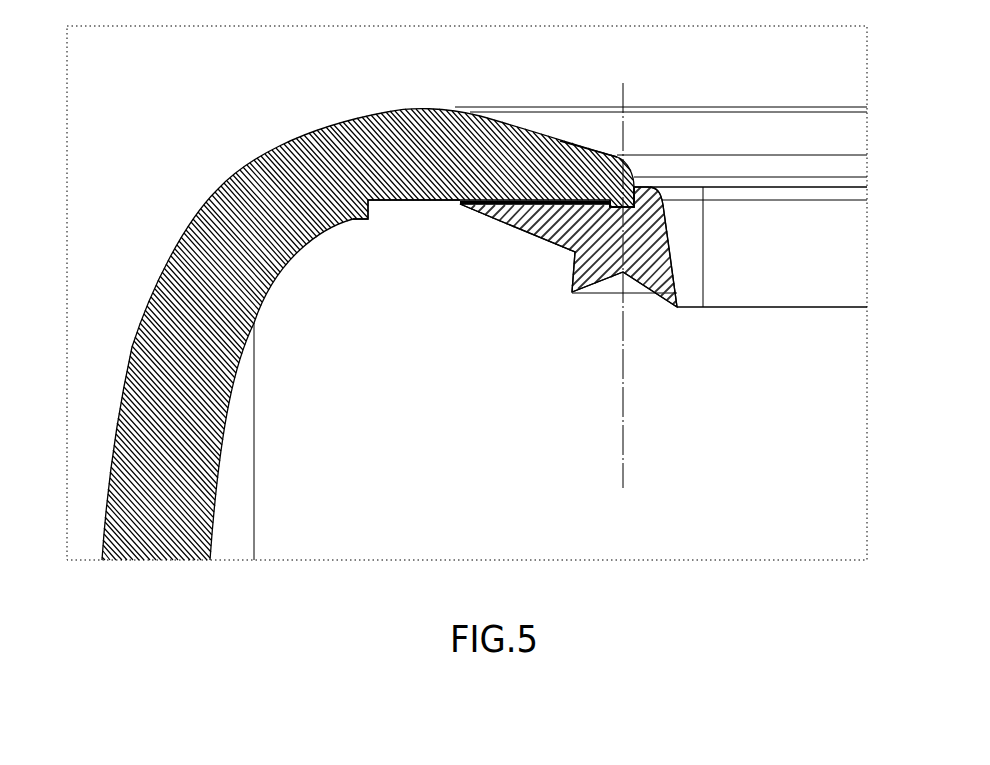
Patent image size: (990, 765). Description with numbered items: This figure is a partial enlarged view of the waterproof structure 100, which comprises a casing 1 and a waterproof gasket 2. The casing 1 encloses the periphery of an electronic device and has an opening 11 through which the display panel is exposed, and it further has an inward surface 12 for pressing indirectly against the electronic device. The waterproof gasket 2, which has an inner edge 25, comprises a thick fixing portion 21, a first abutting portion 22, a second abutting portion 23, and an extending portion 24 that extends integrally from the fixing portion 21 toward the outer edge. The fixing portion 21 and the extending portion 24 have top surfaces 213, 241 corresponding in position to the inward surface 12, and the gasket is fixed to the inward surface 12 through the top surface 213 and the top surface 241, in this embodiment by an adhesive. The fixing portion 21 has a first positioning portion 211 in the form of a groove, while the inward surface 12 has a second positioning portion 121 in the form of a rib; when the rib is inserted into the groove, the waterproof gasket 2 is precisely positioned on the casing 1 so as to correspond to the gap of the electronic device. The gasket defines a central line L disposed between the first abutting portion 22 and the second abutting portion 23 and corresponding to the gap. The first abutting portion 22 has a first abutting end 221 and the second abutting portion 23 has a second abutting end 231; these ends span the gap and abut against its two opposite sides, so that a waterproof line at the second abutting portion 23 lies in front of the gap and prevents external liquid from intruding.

The waterproof structure 100 is at (221, 136).
The casing 1 is at (210, 185).
The opening 11 is at (839, 153).
The inward surface 12 is at (397, 202).
The second positioning portion 121 is at (637, 190).
The waterproof gasket 2 is at (679, 228).
The fixing portion 21 is at (632, 222).
The first positioning portion 211 is at (614, 199).
The top surface of the fixing portion 213 is at (587, 190).
The first abutting portion 22 is at (580, 280).
The first abutting end 221 is at (573, 294).
The second abutting portion 23 is at (668, 284).
The second abutting end 231 is at (677, 308).
The extending portion 24 is at (507, 213).
The top surface of the extending portion 241 is at (490, 200).
The inner edge 25 is at (671, 243).
The central line L is at (622, 98).